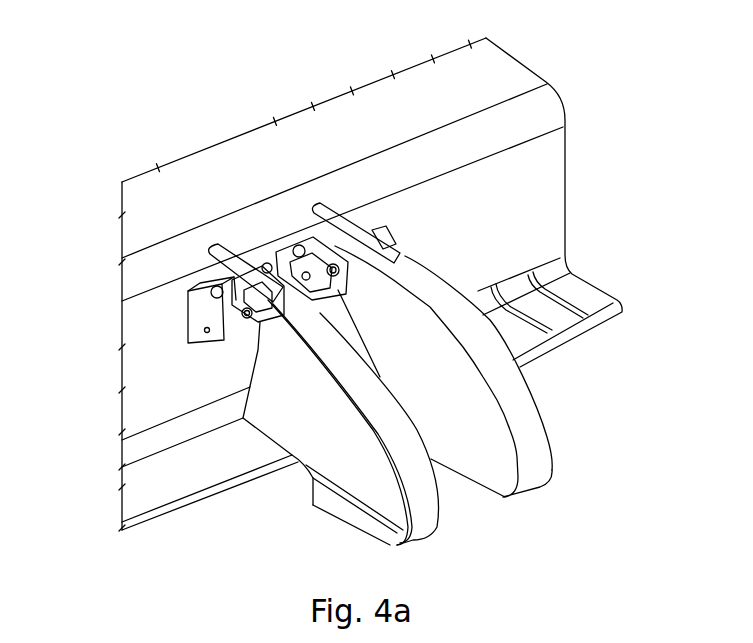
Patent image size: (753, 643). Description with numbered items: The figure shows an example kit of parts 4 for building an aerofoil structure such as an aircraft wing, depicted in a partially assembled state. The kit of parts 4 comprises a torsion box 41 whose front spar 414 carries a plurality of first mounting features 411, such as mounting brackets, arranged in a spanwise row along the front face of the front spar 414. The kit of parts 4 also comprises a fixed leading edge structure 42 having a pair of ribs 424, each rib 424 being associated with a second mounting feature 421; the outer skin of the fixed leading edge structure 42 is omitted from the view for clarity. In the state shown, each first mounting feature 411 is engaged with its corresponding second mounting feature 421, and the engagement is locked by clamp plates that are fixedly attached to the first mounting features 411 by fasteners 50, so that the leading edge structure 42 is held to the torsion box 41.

The kit of parts 4 is at (152, 82).
The torsion box 41 is at (594, 152).
The first mounting feature 411 is at (198, 316).
The front spar 414 is at (503, 226).
The fixed leading edge structure 42 is at (277, 503).
The second mounting feature 421 is at (237, 302).
The rib 424 is at (448, 381).
The fastener 50 is at (300, 242).